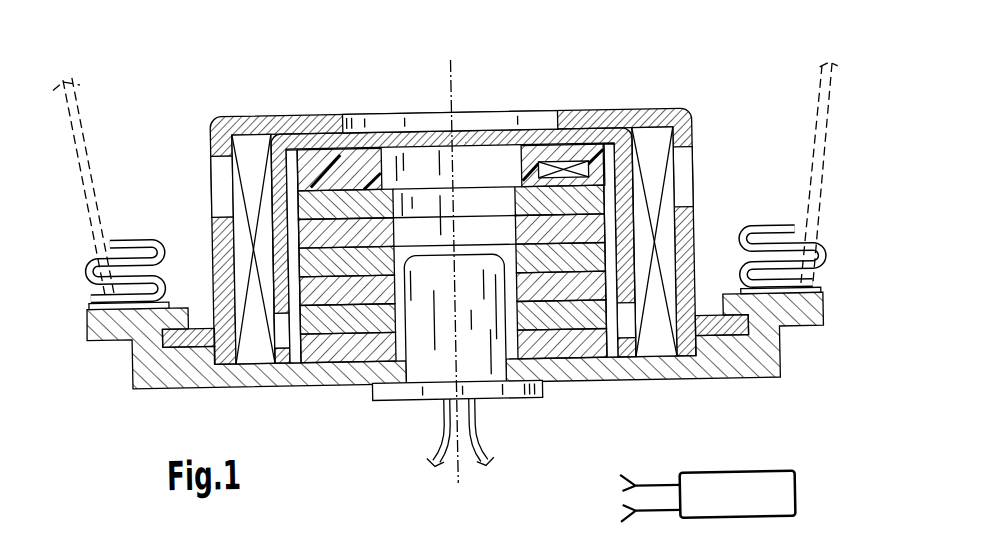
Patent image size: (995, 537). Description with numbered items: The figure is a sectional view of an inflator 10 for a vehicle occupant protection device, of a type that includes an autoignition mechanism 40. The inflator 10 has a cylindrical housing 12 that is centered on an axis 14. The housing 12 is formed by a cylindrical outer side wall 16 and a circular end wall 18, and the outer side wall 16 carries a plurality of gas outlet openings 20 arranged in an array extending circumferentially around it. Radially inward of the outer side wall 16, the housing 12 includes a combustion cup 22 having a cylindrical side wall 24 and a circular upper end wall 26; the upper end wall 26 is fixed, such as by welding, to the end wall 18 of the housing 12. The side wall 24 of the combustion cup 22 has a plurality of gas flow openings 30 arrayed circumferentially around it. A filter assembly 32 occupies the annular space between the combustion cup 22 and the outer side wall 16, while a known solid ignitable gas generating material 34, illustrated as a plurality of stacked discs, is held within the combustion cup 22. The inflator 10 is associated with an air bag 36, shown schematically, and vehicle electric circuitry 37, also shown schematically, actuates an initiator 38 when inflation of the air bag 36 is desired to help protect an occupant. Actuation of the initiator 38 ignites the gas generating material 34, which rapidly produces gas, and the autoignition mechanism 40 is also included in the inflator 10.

The inflator 10 is at (449, 266).
The housing 12 is at (457, 219).
The axis 14 is at (454, 77).
The outer side wall 16 is at (202, 293).
The end wall 18 is at (250, 113).
The gas outlet openings 20 is at (219, 179).
The combustion cup 22 is at (380, 129).
The side wall 24 is at (287, 237).
The upper end wall 26 is at (432, 133).
The gas flow openings 30 is at (286, 324).
The filter assembly 32 is at (634, 211).
The gas generating material 34 is at (605, 261).
The air bag 36 is at (822, 137).
The vehicle electric circuitry 37 is at (739, 492).
The initiator 38 is at (517, 404).
The autoignition mechanism 40 is at (570, 162).